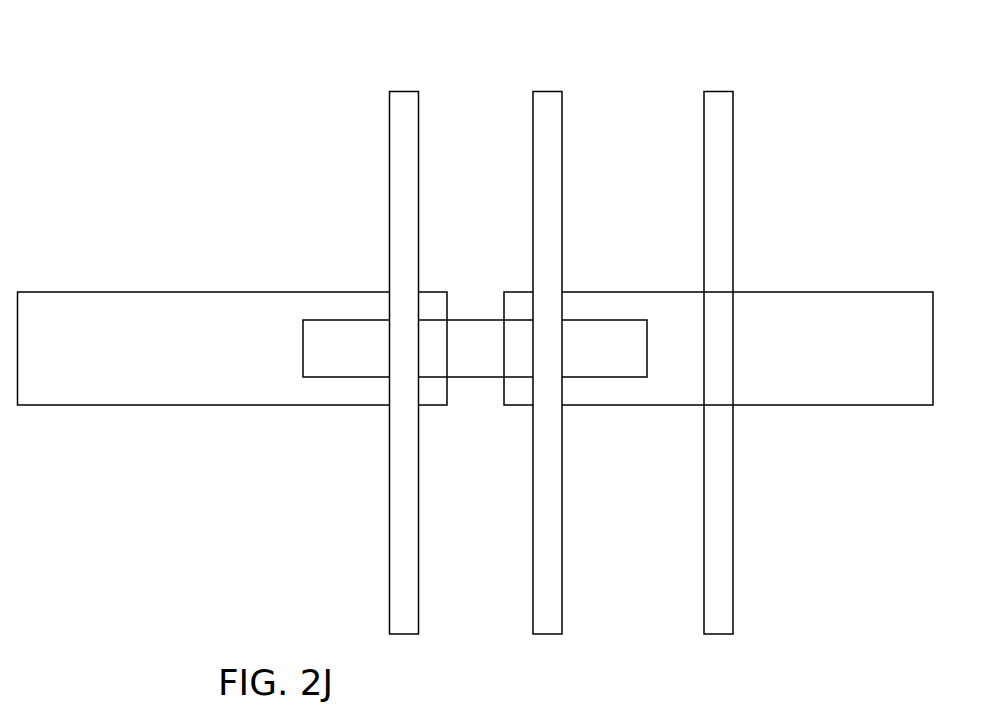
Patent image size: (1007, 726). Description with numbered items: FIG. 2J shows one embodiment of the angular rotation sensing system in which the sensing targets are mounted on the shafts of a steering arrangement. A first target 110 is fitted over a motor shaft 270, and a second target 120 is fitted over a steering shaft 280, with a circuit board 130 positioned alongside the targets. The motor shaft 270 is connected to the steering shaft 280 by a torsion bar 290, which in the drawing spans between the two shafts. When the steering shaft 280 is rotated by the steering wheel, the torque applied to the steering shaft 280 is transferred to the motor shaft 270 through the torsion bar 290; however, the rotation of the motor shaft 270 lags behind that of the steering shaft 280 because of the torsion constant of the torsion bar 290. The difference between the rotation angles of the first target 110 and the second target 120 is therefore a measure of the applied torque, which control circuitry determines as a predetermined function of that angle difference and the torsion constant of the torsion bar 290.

The first target 110 is at (389, 205).
The second target 120 is at (562, 148).
The circuit board 130 is at (718, 91).
The motor shaft 270 is at (189, 292).
The steering shaft 280 is at (778, 292).
The torsion bar 290 is at (332, 377).